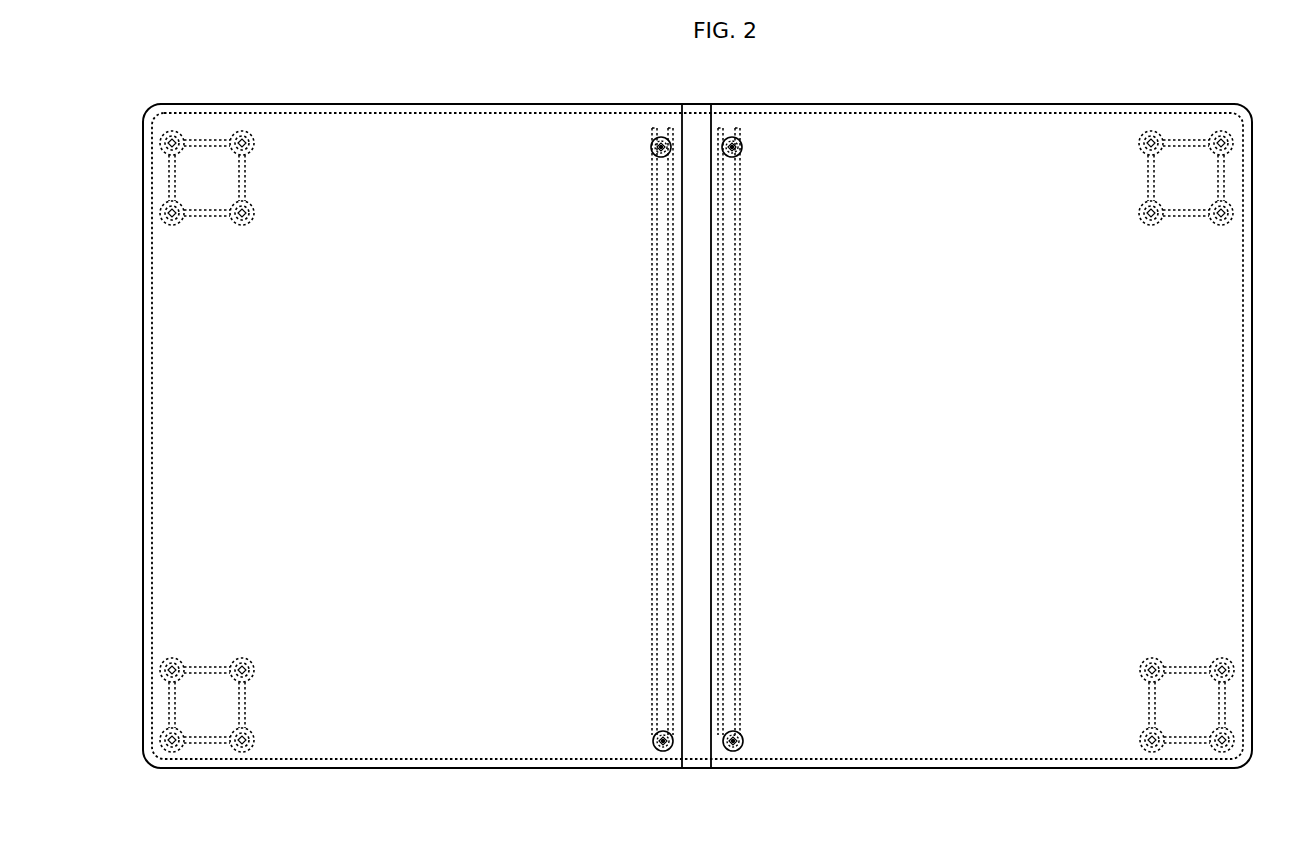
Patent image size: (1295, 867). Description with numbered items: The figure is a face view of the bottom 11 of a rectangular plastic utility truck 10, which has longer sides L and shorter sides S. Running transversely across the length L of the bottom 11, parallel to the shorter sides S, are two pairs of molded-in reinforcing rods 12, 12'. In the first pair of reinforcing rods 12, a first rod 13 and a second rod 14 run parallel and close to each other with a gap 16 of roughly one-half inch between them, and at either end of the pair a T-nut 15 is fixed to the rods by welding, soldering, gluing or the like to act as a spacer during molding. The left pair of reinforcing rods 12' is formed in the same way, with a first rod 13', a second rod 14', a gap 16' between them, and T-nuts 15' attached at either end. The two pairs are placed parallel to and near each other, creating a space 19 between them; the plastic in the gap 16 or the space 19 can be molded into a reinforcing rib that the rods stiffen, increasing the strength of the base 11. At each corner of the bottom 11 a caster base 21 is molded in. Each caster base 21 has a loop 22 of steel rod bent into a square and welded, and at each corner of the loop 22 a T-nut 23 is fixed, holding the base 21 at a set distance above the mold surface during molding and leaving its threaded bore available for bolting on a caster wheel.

The utility truck 10 is at (888, 89).
The bottom 11 is at (452, 170).
The pair of reinforcing rods 12 is at (863, 439).
The left pair of reinforcing rods 12' is at (531, 439).
The first rod 13 is at (823, 431).
The first rod 13' is at (593, 431).
The second rod 14 is at (811, 431).
The second rod 14' is at (584, 431).
The T-nut 15 is at (811, 444).
The T-nut 15' is at (571, 444).
The gap 16 is at (814, 431).
The gap 16' is at (591, 431).
The space 19 is at (695, 600).
The caster base 21 is at (261, 211).
The loop 22 is at (206, 140).
The T-nut 23 is at (252, 137).
The shorter sides S is at (164, 498).
The longer sides L is at (1019, 121).